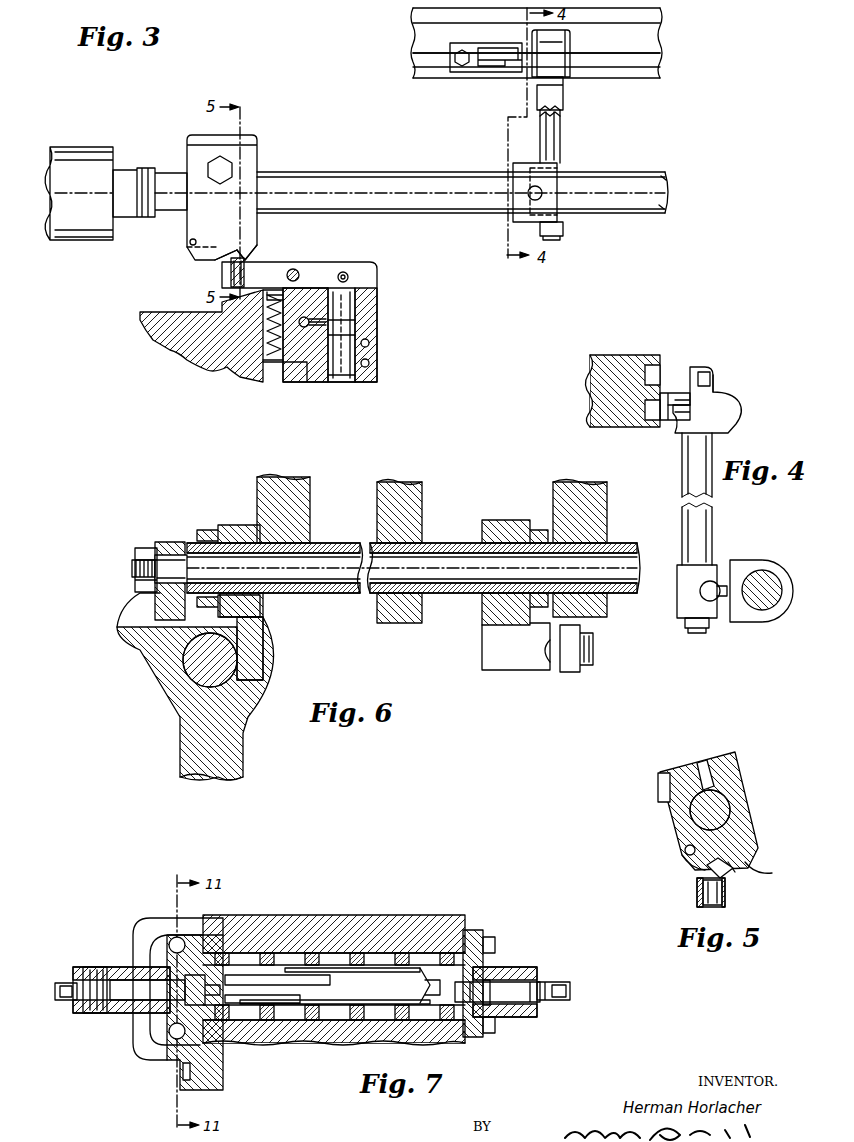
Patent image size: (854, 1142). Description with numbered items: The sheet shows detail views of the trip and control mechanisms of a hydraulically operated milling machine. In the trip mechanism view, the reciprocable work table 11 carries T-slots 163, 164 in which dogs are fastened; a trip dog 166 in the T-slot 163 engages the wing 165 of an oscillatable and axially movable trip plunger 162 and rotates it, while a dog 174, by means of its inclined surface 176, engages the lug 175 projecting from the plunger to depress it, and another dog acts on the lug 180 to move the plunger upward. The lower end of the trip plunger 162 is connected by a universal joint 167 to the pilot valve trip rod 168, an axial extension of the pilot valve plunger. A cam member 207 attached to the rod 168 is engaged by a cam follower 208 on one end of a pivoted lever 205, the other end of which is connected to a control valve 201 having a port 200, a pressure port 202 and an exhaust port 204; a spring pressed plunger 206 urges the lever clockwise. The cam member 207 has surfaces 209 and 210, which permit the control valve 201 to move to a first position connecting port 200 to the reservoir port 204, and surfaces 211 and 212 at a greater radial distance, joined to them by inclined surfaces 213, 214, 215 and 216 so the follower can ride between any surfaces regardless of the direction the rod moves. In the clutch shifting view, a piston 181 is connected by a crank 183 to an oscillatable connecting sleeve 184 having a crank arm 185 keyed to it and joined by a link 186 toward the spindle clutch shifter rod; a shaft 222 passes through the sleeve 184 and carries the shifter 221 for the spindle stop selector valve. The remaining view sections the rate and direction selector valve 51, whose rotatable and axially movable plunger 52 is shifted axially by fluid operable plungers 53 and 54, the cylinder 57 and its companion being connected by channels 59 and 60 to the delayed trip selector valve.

In FIG. 3, the work table 11 is at (415, 20).
In FIG. 4, the work table 11 is at (636, 355).
In FIG. 7, the rate and direction selector valve 51 is at (421, 949).
In FIG. 7, the plunger 52 is at (457, 1046).
In FIG. 7, the fluid operable plunger 53 is at (140, 992).
In FIG. 7, the fluid operable plunger 54 is at (502, 985).
In FIG. 7, the cylinder 57 is at (112, 995).
In FIG. 7, the channel 59 is at (68, 998).
In FIG. 7, the channel 60 is at (552, 988).
In FIG. 3, the trip plunger 162 is at (560, 135).
In FIG. 4, the trip plunger 162 is at (688, 475).
In FIG. 3, the T-slot 163 is at (650, 62).
In FIG. 4, the T-slot 163 is at (645, 420).
In FIG. 3, the T-slot 164 is at (645, 33).
In FIG. 4, the T-slot 164 is at (655, 368).
In FIG. 3, the wing 165 is at (580, 62).
In FIG. 4, the wing 165 is at (733, 410).
In FIG. 3, the trip dog 166 is at (507, 70).
In FIG. 3, the universal joint 167 is at (538, 201).
In FIG. 4, the universal joint 167 is at (716, 580).
In FIG. 3, the pilot valve trip rod 168 is at (433, 172).
In FIG. 4, the pilot valve trip rod 168 is at (765, 575).
In FIG. 5, the pilot valve trip rod 168 is at (712, 811).
In FIG. 4, the dog 174 is at (672, 395).
In FIG. 4, the lug 175 is at (712, 368).
In FIG. 4, the inclined surface 176 is at (672, 415).
In FIG. 4, the lug 180 is at (712, 377).
In FIG. 6, the piston 181 is at (184, 690).
In FIG. 6, the crank 183 is at (265, 662).
In FIG. 6, the connecting sleeve 184 is at (237, 543).
In FIG. 6, the crank arm 185 is at (487, 650).
In FIG. 6, the link 186 is at (548, 650).
In FIG. 3, the port 200 is at (372, 343).
In FIG. 3, the control valve 201 is at (343, 384).
In FIG. 3, the pressure port 202 is at (307, 328).
In FIG. 3, the exhaust port 204 is at (372, 366).
In FIG. 3, the pivoted lever 205 is at (323, 270).
In FIG. 5, the pivoted lever 205 is at (698, 905).
In FIG. 3, the spring pressed plunger 206 is at (274, 290).
In FIG. 3, the cam member 207 is at (254, 156).
In FIG. 5, the cam member 207 is at (678, 823).
In FIG. 3, the cam follower 208 is at (232, 272).
In FIG. 5, the cam follower 208 is at (703, 890).
In FIG. 3, the cam surface 209 is at (247, 252).
In FIG. 5, the cam surface 209 is at (685, 850).
In FIG. 3, the cam surface 210 is at (190, 242).
In FIG. 3, the cam surface 211 is at (215, 258).
In FIG. 5, the cam surface 211 is at (695, 872).
In FIG. 5, the cam surface 212 is at (746, 866).
In FIG. 3, the inclined surface 213 is at (218, 247).
In FIG. 3, the inclined surface 214 is at (227, 249).
In FIG. 5, the inclined surface 215 is at (728, 876).
In FIG. 5, the inclined surface 216 is at (735, 870).
In FIG. 6, the shifter 221 is at (172, 570).
In FIG. 6, the shaft 222 is at (168, 540).